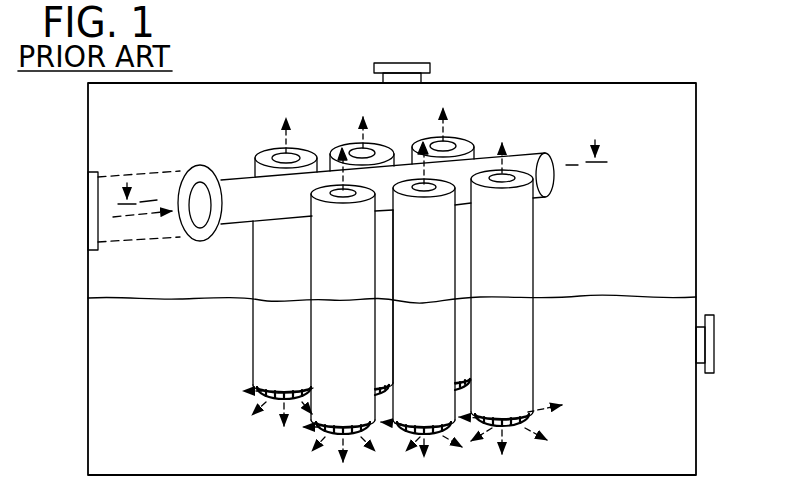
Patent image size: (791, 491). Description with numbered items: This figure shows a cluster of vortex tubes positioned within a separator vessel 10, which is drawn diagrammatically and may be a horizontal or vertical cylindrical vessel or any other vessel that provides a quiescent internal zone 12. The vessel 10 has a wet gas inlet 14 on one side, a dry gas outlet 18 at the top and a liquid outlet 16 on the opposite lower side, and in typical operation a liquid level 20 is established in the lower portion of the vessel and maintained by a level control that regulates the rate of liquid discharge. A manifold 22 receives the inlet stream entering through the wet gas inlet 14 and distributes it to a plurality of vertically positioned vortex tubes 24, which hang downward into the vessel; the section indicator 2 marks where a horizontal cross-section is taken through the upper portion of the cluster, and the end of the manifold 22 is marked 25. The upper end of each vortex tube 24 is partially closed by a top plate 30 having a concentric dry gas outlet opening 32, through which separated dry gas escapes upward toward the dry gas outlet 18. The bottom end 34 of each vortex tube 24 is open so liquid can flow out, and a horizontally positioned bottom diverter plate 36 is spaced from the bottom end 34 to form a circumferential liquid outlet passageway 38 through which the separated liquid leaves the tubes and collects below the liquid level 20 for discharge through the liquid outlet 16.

The section line 2- 2 is at (360, 185).
The vessel 10 is at (697, 228).
The quiescent internal zone 12 is at (672, 238).
The wet gas inlet 14 is at (88, 202).
The liquid outlet 16 is at (715, 333).
The dry gas outlet 18 is at (410, 63).
The liquid level 20 is at (147, 297).
The manifold 22 is at (232, 186).
The vortex tubes 24 is at (231, 177).
The header end 25 is at (478, 157).
The top plate 30 is at (291, 148).
The dry gas outlet opening 32 is at (285, 152).
The bottom end 34 is at (272, 390).
The bottom diverter plate 36 is at (338, 437).
The circumferential liquid outlet passageway 38 is at (275, 402).